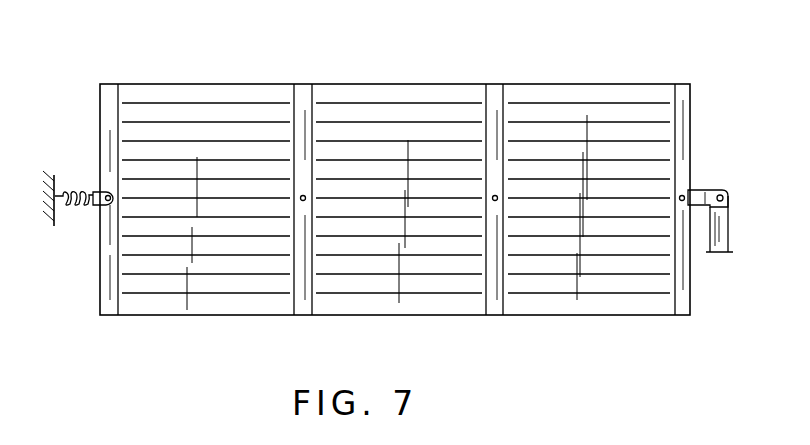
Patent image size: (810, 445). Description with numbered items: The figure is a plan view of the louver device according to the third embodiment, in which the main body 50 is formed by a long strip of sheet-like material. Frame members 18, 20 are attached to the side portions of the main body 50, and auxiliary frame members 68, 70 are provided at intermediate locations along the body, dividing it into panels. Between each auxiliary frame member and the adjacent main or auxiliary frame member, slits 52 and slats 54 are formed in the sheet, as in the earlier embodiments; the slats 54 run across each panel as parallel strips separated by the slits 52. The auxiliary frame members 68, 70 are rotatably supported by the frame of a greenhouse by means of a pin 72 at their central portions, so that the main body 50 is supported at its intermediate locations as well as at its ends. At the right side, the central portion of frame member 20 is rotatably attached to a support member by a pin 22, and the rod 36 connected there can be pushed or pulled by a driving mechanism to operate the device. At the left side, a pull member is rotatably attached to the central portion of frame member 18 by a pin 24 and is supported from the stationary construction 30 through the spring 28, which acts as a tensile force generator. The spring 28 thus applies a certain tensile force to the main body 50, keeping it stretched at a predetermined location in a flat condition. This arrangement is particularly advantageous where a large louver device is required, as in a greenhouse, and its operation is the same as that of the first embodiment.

The main body 50 is at (430, 71).
The frame member 18 is at (101, 123).
The frame member 20 is at (692, 141).
The pin 22 is at (692, 195).
The pin 24 is at (107, 197).
The spring 28 is at (72, 208).
The stationary construction 30 is at (56, 177).
The rod 36 is at (724, 231).
The slits 52 is at (250, 141).
The slats 54 is at (168, 134).
The auxiliary frame member 68 is at (303, 88).
The auxiliary frame member 70 is at (497, 86).
The pin 72 is at (306, 196).